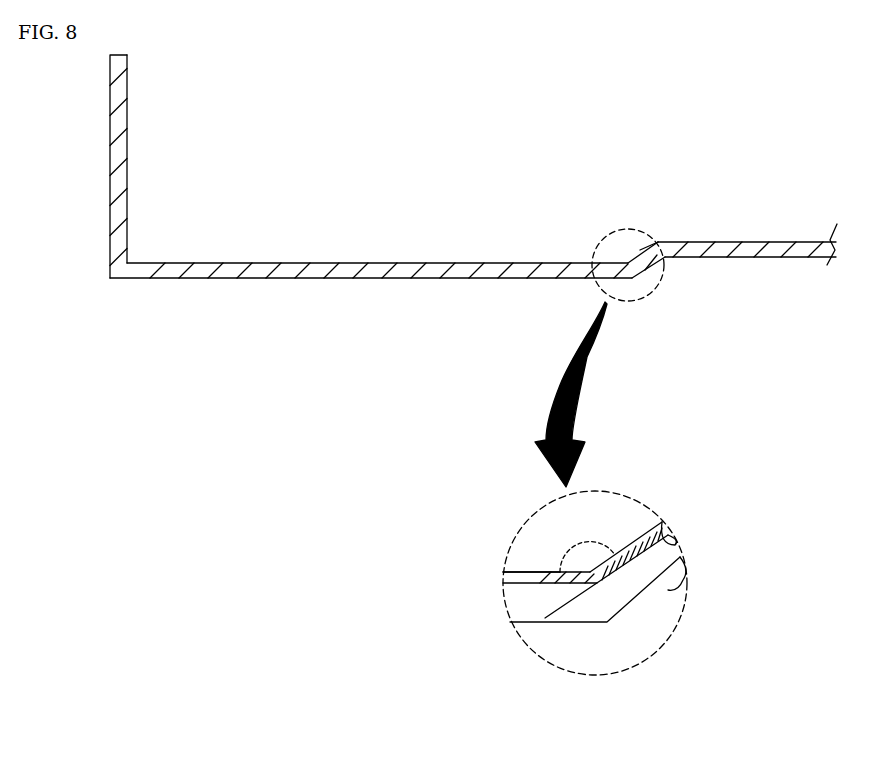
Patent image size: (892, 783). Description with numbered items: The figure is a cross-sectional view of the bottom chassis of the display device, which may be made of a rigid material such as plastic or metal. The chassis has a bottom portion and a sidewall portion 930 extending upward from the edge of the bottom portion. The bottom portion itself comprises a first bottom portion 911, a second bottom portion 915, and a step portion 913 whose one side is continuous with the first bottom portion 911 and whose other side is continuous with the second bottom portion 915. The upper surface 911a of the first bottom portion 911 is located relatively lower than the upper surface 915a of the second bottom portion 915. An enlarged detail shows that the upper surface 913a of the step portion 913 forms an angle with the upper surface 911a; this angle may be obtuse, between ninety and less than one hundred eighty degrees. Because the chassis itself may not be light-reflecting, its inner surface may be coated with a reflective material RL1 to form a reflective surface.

The sidewall portion 930 is at (128, 153).
The first bottom portion 911 is at (364, 270).
The upper surface of the first bottom portion 911a is at (303, 262).
The step portion 913 is at (630, 263).
The upper surface of the step portion 913a is at (650, 246).
The second bottom portion 915 is at (790, 252).
The upper surface of the second bottom portion 915a is at (756, 242).
The reflective material RL1 is at (533, 572).